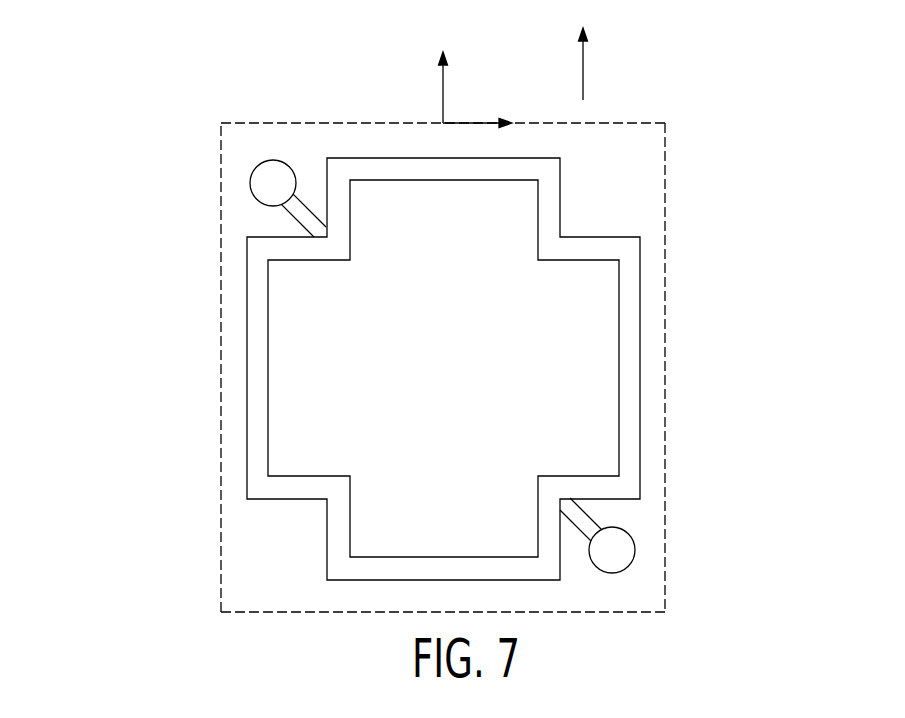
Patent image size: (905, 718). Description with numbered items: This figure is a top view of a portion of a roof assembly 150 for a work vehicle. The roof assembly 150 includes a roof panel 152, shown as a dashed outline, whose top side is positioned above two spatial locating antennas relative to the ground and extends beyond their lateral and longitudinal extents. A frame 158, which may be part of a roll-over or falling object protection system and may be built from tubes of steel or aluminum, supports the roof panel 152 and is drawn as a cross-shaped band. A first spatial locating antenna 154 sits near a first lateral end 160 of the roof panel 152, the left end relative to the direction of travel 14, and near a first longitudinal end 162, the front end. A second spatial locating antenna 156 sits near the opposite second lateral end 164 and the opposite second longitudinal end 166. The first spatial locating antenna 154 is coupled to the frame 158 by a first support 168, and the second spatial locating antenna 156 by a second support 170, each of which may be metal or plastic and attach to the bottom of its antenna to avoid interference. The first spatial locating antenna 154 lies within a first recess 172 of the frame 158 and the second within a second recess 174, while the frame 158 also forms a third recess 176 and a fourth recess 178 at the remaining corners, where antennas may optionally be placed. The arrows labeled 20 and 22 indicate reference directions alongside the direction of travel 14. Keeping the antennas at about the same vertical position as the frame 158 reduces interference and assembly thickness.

The direction of travel 14 is at (583, 70).
The first axis 20 is at (472, 123).
The second axis 22 is at (445, 93).
The roof assembly 150 is at (150, 288).
The roof panel 152 is at (665, 290).
The first spatial locating antenna 154 is at (262, 170).
The second spatial locating antenna 156 is at (628, 566).
The frame 158 is at (628, 323).
The first lateral end 160 is at (221, 375).
The first longitudinal end 162 is at (397, 123).
The second lateral end 164 is at (665, 365).
The second longitudinal end 166 is at (559, 612).
The first support 168 is at (300, 228).
The second support 170 is at (588, 516).
The first recess 172 is at (250, 207).
The second recess 174 is at (637, 523).
The third recess 176 is at (603, 197).
The fourth recess 178 is at (293, 527).